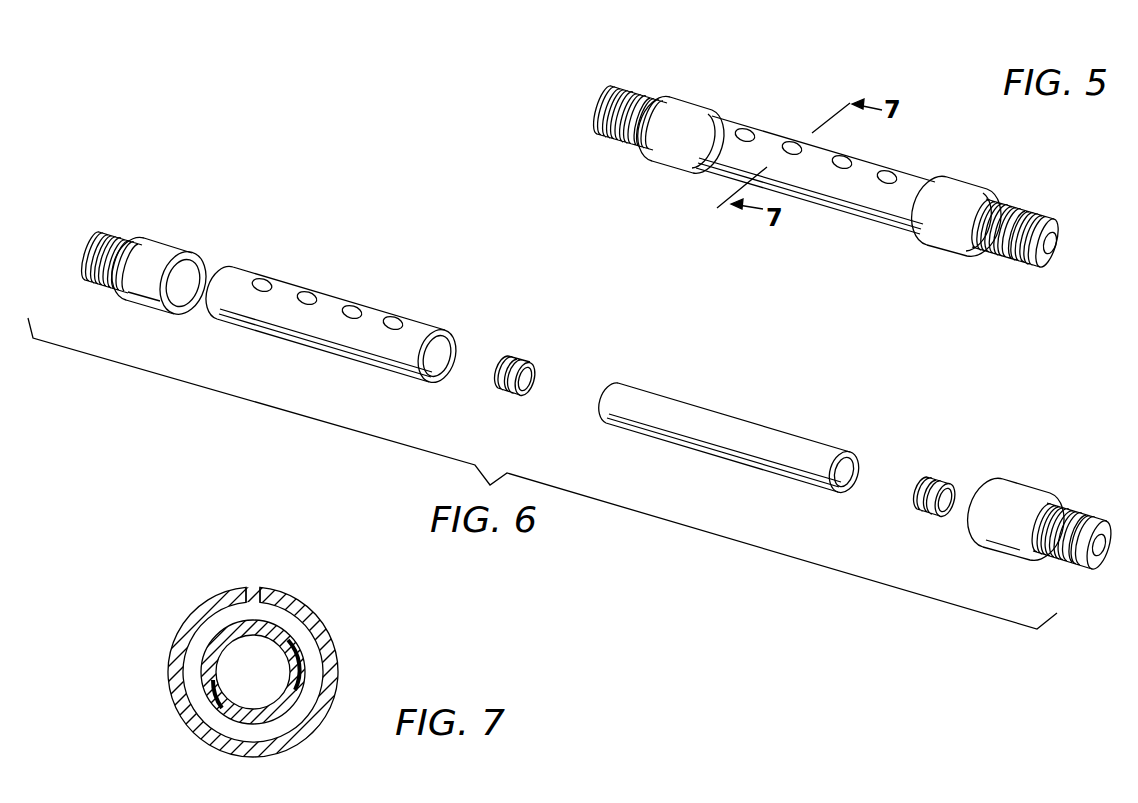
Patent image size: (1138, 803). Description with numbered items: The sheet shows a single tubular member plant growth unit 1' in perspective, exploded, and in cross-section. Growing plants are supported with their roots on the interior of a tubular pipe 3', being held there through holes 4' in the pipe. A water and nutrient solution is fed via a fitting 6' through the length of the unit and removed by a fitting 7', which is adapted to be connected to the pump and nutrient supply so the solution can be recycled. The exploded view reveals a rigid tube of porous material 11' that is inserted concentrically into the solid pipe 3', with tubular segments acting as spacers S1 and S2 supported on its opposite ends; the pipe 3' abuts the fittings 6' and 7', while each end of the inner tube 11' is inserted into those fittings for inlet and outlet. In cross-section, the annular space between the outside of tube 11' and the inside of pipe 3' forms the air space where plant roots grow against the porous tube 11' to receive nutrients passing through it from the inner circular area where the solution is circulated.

In FIG. 5, the tubular member plant growth unit 1' is at (828, 161).
In FIG. 5, the tubular pipe 3' is at (815, 190).
In FIG. 6, the tubular pipe 3' is at (334, 328).
In FIG. 7, the tubular pipe 3' is at (285, 670).
In FIG. 5, the holes 4' is at (825, 155).
In FIG. 7, the holes 4' is at (243, 569).
In FIG. 5, the fitting 6' is at (659, 108).
In FIG. 6, the fitting 6' is at (143, 286).
In FIG. 5, the fitting 7' is at (987, 236).
In FIG. 6, the fitting 7' is at (1027, 524).
In FIG. 6, the rigid tube of porous material 11' is at (731, 430).
In FIG. 7, the rigid tube of porous material 11' is at (246, 670).
In FIG. 6, the spacer S1 is at (928, 483).
In FIG. 6, the spacer S2 is at (506, 363).